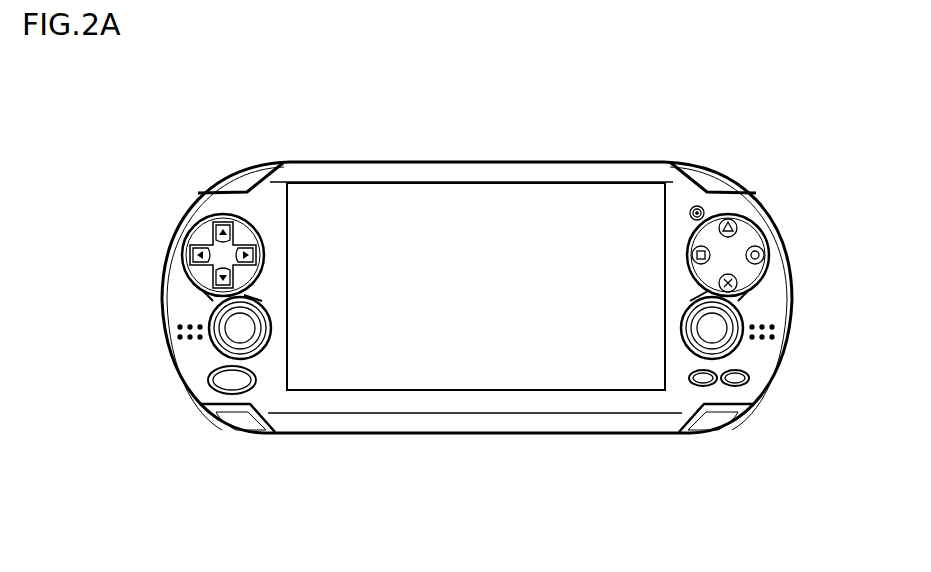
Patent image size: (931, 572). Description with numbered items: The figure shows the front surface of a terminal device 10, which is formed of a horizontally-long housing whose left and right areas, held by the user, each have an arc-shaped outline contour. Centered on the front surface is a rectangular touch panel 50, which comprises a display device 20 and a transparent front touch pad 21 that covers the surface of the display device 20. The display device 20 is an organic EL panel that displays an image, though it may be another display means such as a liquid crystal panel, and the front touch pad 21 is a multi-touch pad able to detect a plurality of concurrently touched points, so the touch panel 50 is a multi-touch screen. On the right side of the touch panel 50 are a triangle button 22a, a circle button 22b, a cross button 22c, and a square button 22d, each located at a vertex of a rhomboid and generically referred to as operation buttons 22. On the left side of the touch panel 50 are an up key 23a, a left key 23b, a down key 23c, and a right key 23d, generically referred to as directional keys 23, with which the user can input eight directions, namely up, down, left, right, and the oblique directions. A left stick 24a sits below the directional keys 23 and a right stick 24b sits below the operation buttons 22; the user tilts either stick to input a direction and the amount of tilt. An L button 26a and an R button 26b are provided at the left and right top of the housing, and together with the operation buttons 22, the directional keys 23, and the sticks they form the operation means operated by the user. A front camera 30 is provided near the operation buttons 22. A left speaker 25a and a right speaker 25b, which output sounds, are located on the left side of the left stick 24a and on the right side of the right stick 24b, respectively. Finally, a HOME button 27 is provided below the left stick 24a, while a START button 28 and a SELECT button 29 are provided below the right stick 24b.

The terminal device 10 is at (462, 562).
The display device 20 is at (470, 200).
The front touch pad 21 is at (476, 286).
The touch panel 50 is at (458, 118).
The operation buttons 22 is at (850, 192).
The triangle button 22a is at (734, 228).
The circle button 22b is at (758, 255).
The cross button 22c is at (731, 284).
The square button 22d is at (704, 256).
The directional keys 23 is at (100, 192).
The up key 23a is at (218, 231).
The left key 23b is at (205, 256).
The down key 23c is at (222, 281).
The right key 23d is at (246, 256).
The left stick 24a is at (228, 335).
The right stick 24b is at (722, 337).
The left speaker 25a is at (180, 334).
The right speaker 25b is at (770, 334).
The L button 26a is at (238, 184).
The R button 26b is at (716, 184).
The HOME button 27 is at (222, 382).
The START button 28 is at (740, 383).
The SELECT button 29 is at (703, 388).
The front camera 30 is at (693, 207).